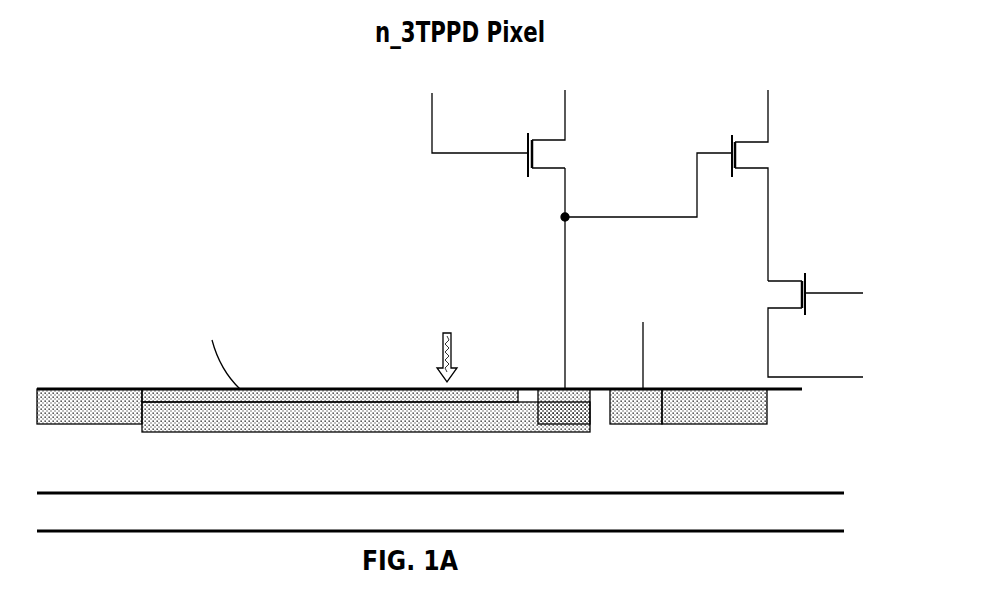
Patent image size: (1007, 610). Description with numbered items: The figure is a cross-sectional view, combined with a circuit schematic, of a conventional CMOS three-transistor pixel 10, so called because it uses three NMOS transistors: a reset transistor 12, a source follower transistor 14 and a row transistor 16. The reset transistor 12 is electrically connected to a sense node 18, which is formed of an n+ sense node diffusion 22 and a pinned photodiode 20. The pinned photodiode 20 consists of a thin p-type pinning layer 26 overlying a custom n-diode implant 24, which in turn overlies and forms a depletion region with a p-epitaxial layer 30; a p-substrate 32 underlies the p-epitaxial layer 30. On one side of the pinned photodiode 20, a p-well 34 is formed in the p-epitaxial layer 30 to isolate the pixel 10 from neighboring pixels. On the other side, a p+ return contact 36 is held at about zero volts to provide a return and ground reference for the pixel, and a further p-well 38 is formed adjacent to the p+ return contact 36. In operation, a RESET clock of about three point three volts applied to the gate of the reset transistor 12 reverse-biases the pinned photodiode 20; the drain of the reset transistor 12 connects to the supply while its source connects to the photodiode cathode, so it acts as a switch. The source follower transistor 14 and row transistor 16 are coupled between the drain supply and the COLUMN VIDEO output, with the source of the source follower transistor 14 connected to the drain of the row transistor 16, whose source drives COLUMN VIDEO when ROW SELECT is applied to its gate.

The 3T pixel 10 is at (262, 54).
The reset transistor 12 is at (566, 128).
The source follower transistor 14 is at (752, 141).
The row transistor 16 is at (777, 281).
The sense node 18 is at (577, 378).
The pinned photodiode 20 is at (485, 372).
The n+ sense node diffusion 22 is at (591, 413).
The n-diode implant 24 is at (212, 425).
The p-type pinning layer 26 is at (316, 389).
The p-epitaxial layer 30 is at (430, 481).
The p-substrate 32 is at (545, 524).
The p-well 34 is at (90, 389).
The p+ return contact 36 is at (652, 389).
The p-well 38 is at (712, 424).